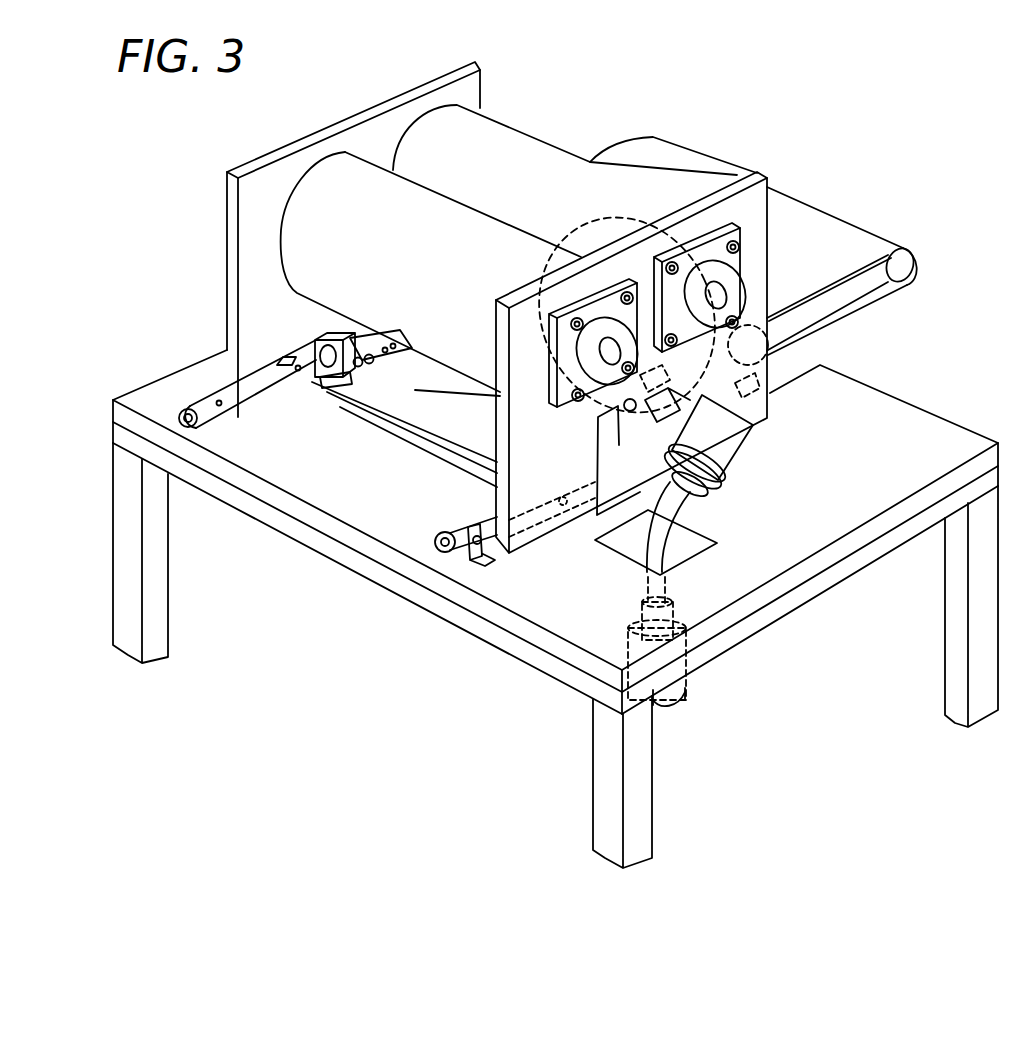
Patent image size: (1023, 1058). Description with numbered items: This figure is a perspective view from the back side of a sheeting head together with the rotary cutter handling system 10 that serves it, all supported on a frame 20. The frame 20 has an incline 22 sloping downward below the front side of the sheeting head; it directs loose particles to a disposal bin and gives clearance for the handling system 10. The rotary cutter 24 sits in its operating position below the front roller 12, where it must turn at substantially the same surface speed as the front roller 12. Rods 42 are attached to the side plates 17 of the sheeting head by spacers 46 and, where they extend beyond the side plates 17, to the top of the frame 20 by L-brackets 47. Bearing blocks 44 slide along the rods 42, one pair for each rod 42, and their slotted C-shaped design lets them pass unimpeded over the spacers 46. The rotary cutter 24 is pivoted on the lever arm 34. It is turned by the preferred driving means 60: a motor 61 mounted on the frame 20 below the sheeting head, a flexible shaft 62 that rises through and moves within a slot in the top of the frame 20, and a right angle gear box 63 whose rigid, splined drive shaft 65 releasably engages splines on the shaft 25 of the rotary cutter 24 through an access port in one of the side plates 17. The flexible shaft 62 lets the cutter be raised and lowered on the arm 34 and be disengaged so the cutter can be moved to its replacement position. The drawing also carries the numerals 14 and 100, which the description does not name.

The rotary cutter handling system 10 is at (330, 656).
The front roller 12 is at (502, 163).
The roller drum 14 is at (344, 180).
The side plates 17 is at (752, 202).
The frame 20 is at (873, 417).
The incline 22 is at (413, 433).
The rotary cutter 24 is at (652, 390).
The shaft of the rotary cutter 25 is at (624, 407).
The lever arm 34 is at (627, 440).
The rods 42 is at (478, 527).
The bearing blocks 44 is at (331, 340).
The spacers 46 is at (283, 358).
The L-brackets 47 is at (490, 560).
The means for driving the rotary cutter 60 is at (686, 686).
The motor 61 is at (668, 700).
The flexible shaft 62 is at (678, 505).
The right angle gear box 63 is at (735, 443).
The splined drive shaft 65 is at (667, 422).
The apparatus 100 is at (590, 128).